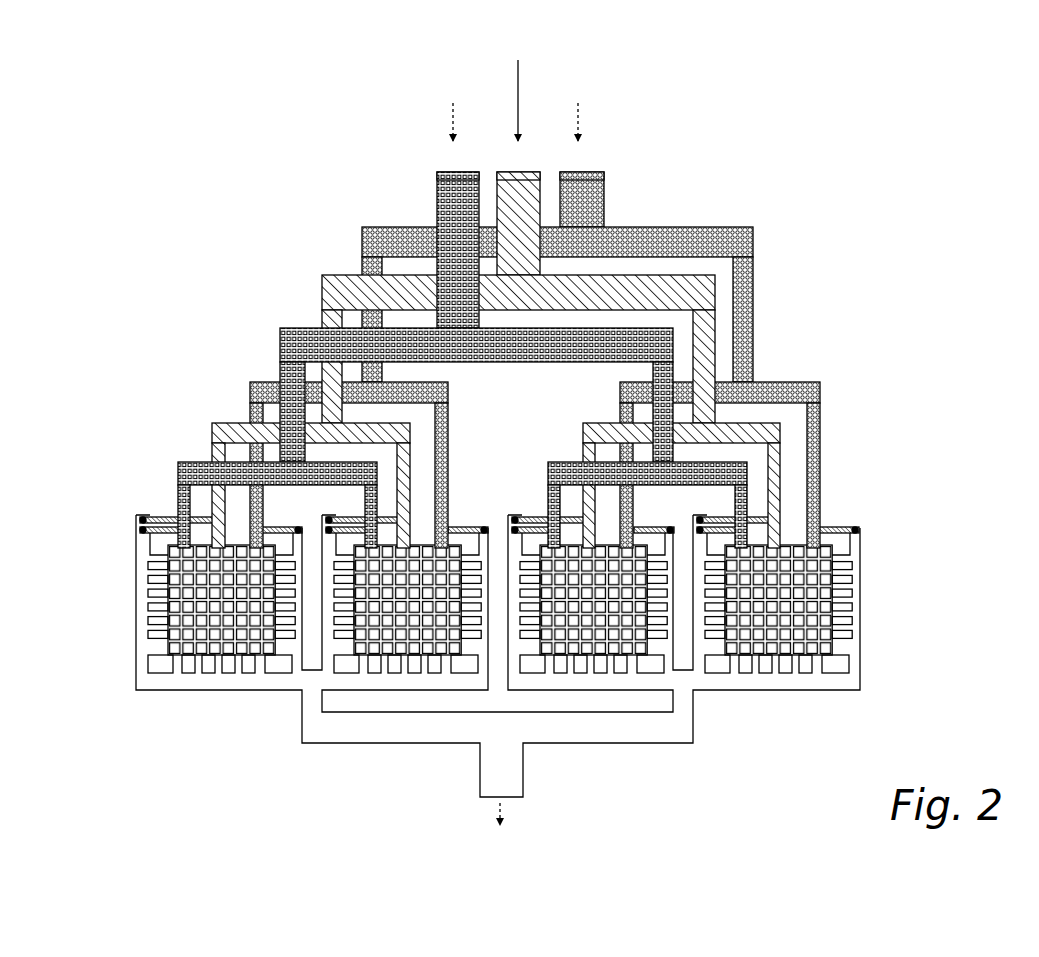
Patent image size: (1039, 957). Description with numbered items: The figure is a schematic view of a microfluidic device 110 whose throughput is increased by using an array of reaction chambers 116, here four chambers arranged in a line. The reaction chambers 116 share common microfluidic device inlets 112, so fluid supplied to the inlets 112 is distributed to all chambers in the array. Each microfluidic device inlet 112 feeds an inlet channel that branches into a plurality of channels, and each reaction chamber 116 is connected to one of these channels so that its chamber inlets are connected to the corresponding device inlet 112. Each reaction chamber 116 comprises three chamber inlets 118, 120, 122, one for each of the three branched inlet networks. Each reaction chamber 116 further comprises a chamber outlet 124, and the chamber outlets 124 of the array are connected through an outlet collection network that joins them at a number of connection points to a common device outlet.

The microfluidic device 110 is at (928, 177).
The microfluidic device inlet 112 is at (461, 172).
The reaction chamber 116 is at (823, 623).
The chamber inlet 118 is at (747, 502).
The chamber inlet 120 is at (780, 462).
The chamber inlet 122 is at (820, 418).
The chamber outlet 124 is at (863, 677).